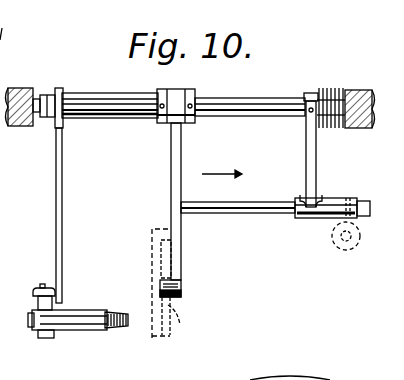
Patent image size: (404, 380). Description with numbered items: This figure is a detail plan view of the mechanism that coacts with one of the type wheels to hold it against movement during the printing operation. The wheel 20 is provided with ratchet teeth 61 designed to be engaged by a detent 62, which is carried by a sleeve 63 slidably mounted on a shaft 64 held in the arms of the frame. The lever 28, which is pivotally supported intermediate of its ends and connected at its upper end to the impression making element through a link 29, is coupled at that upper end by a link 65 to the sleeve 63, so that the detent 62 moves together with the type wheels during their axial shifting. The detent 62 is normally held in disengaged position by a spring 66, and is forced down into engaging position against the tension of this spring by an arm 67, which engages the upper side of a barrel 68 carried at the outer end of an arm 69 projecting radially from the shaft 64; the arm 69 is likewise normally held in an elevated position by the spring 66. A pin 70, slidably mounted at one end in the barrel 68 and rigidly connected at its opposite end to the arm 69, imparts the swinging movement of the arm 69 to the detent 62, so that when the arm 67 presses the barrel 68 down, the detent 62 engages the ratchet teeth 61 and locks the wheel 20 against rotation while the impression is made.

The wheel 20 is at (156, 338).
The lever 28 is at (112, 313).
The link 29 is at (78, 323).
The ratchet teeth 61 is at (171, 325).
The detent 62 is at (178, 279).
The sleeve 63 is at (100, 101).
The shaft 64 is at (240, 100).
The link 65 is at (65, 193).
The spring 66 is at (321, 89).
The arm 67 is at (358, 190).
The barrel 68 is at (333, 198).
The arm 69 is at (170, 187).
The pin 70 is at (257, 214).